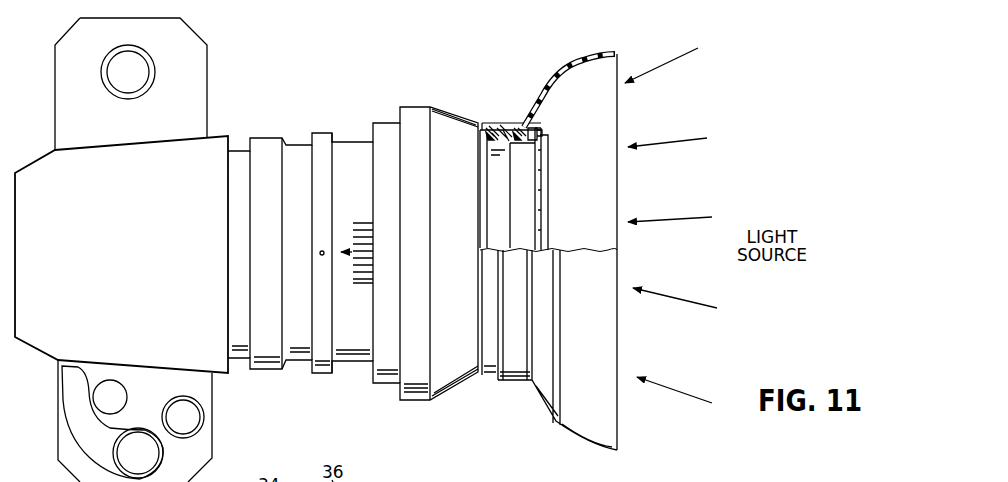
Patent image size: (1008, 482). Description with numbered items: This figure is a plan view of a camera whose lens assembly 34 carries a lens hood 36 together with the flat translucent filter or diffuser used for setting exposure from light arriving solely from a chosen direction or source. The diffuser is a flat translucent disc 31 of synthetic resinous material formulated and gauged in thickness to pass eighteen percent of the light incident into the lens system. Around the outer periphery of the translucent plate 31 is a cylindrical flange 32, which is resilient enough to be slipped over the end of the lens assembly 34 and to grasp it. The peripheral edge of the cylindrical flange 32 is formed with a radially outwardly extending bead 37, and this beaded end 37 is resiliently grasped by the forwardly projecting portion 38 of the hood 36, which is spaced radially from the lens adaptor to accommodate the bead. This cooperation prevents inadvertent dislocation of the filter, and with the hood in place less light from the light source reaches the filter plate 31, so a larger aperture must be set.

The flat translucent disc 31 is at (542, 195).
The cylindrical flange 32 is at (532, 130).
The lens assembly 34 is at (455, 106).
The lens hood 36 is at (538, 80).
The bead 37 is at (521, 124).
The forwardly projecting portion 38 is at (528, 119).